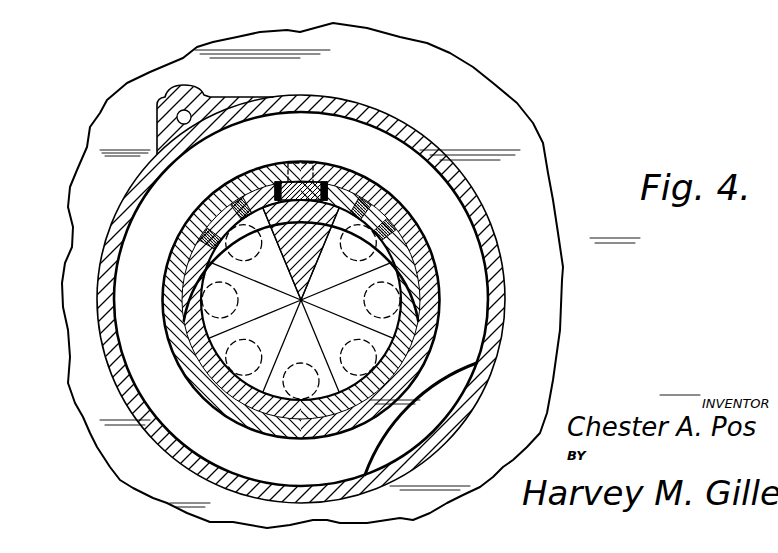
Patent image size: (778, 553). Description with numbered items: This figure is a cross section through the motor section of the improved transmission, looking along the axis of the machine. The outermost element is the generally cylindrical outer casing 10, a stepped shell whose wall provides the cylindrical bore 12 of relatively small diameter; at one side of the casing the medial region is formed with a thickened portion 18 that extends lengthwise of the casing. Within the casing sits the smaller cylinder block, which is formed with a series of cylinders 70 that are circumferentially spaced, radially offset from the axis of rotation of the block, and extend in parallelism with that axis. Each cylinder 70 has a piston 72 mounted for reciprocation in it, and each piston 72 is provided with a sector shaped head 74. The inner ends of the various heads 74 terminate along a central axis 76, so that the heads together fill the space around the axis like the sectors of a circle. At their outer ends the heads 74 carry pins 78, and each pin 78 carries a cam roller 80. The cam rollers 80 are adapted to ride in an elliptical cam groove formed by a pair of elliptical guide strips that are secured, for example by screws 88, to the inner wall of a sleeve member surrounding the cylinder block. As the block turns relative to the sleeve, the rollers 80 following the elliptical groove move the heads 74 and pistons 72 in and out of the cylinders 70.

The outer casing 10 is at (432, 143).
The cylindrical bore 12 is at (488, 212).
The thickened portion 18 is at (170, 108).
The cylinders 70 is at (175, 336).
The piston 72 is at (258, 230).
The sector shaped head 74 is at (213, 275).
The central axis 76 is at (303, 307).
The pins 78 is at (325, 167).
The cam rollers 80 is at (222, 217).
The screws 88 is at (295, 165).